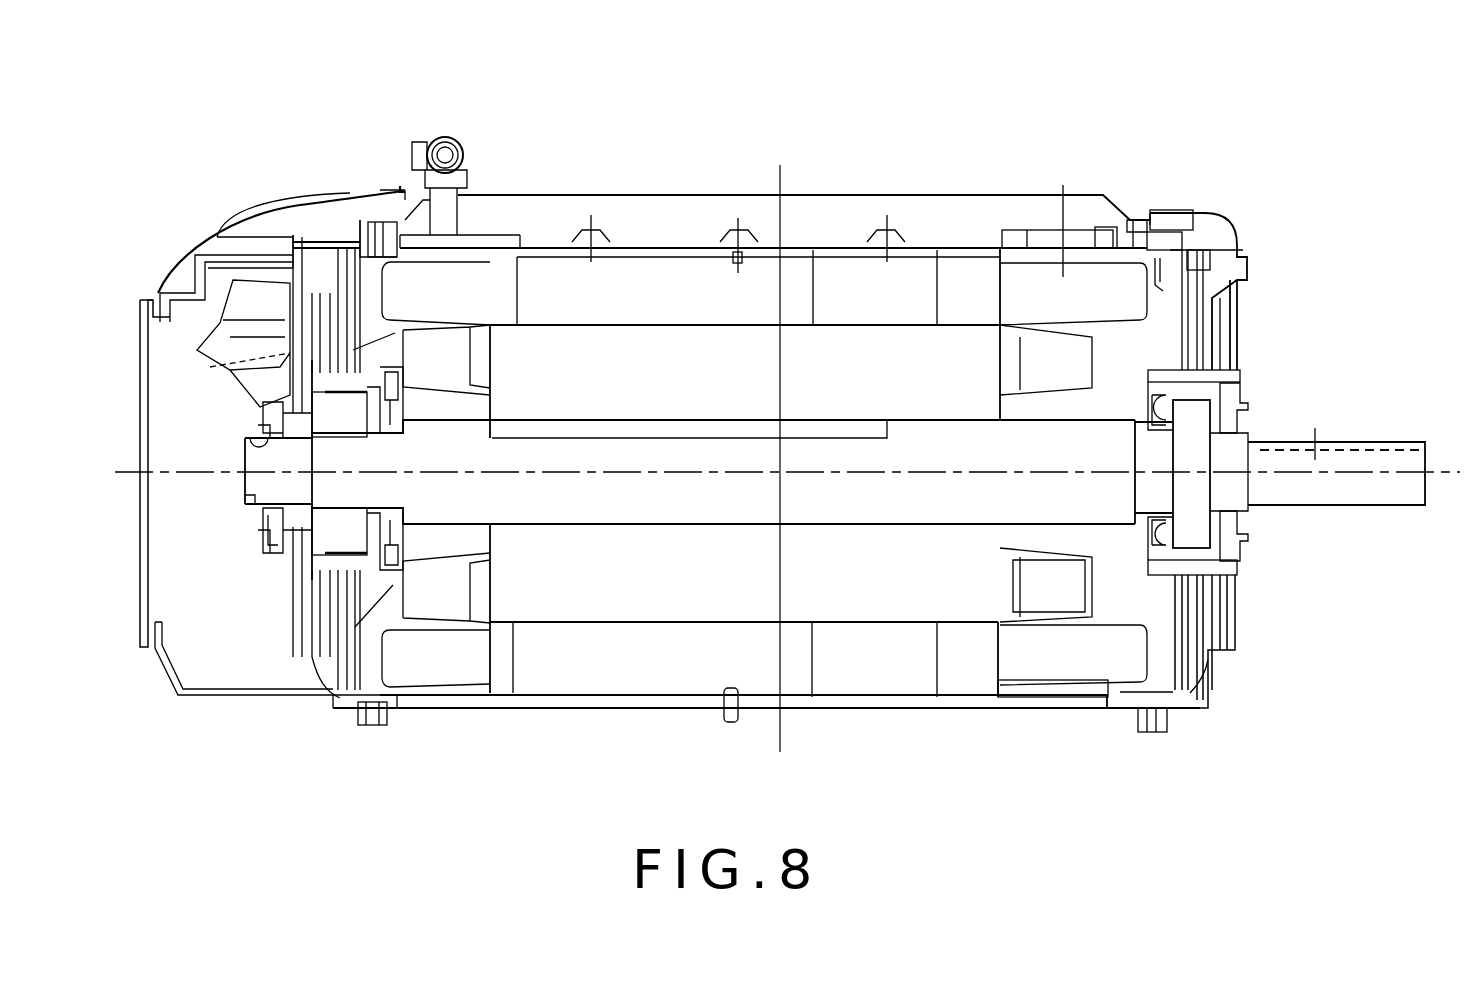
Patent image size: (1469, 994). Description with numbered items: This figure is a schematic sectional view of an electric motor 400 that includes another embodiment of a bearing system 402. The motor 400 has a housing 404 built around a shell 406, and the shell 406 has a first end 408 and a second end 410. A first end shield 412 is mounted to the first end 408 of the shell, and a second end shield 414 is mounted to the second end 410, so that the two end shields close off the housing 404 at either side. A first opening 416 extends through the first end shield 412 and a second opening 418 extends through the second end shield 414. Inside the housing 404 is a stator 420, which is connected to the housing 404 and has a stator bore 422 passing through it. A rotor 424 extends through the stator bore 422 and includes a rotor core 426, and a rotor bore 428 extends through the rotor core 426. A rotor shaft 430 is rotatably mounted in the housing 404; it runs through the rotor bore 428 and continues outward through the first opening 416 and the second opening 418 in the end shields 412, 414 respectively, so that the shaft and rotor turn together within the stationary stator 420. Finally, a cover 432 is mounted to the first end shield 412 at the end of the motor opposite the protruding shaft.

The electric motor 400 is at (602, 170).
The bearing system 402 is at (355, 422).
The housing 404 is at (697, 243).
The shell 406 is at (966, 243).
The first end 408 is at (400, 188).
The second end 410 is at (1128, 222).
The first end shield 412 is at (310, 302).
The second end shield 414 is at (1233, 317).
The first opening 416 is at (243, 497).
The second opening 418 is at (1192, 460).
The stator 420 is at (655, 670).
The stator bore 422 is at (1100, 590).
The rotor 424 is at (793, 417).
The rotor core 426 is at (838, 603).
The rotor bore 428 is at (990, 497).
The rotor shaft 430 is at (1400, 457).
The cover 432 is at (287, 188).